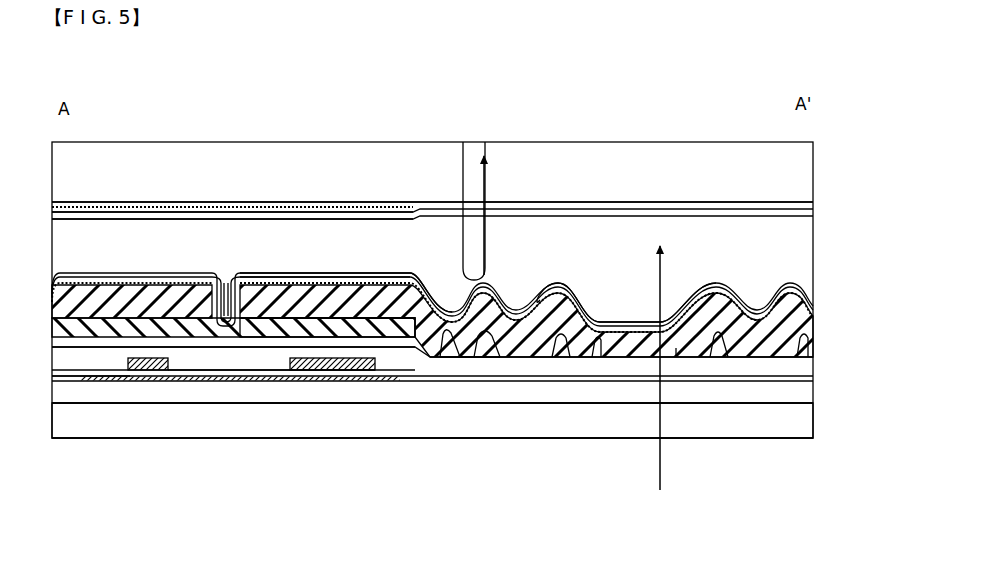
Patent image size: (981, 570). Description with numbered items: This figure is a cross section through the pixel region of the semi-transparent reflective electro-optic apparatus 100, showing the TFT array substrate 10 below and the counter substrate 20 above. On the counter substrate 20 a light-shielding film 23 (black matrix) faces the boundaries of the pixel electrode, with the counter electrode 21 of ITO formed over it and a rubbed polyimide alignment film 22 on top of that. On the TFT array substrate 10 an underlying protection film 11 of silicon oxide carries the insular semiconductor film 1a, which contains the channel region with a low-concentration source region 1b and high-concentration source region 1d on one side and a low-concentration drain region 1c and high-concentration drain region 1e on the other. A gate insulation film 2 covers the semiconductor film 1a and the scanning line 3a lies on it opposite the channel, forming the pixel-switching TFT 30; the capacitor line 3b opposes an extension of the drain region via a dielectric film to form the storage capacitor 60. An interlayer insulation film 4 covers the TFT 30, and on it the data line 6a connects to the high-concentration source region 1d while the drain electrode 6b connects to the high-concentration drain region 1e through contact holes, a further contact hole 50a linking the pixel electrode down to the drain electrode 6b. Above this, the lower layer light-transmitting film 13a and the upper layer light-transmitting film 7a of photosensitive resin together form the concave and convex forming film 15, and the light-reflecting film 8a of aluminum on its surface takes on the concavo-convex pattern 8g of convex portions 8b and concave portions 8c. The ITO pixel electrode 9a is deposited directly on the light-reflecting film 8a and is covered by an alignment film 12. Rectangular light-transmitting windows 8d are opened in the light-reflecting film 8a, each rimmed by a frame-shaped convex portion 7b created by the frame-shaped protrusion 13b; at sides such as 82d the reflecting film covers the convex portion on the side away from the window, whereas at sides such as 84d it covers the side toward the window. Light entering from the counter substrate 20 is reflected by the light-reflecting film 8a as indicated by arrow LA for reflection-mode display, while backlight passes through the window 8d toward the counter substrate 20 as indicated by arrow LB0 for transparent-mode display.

The electro-optic apparatus 100 is at (190, 110).
The counter substrate 20 is at (822, 137).
The counter electrode 21 is at (272, 214).
The alignment film 22 is at (327, 218).
The light-shielding film 23 is at (385, 210).
The TFT array substrate 10 is at (866, 308).
The underlying protection film 11 is at (808, 394).
The gate insulation film 2 is at (808, 379).
The interlayer insulation film 4 is at (808, 362).
The semiconductor film 1a is at (152, 385).
The low-concentration source region 1b is at (110, 385).
The low-concentration drain region 1c is at (208, 385).
The high-concentration source region 1d is at (80, 385).
The high-concentration drain region 1e is at (262, 385).
The pixel-switching TFT 30 is at (176, 385).
The storage capacitor 60 is at (345, 405).
The scanning line 3a is at (145, 345).
The capacitor line 3b is at (332, 345).
The data line 6a is at (100, 345).
The drain electrode 6b is at (253, 345).
The contact hole 50a is at (226, 253).
The alignment film 12 is at (272, 274).
The pixel electrode 9a is at (360, 284).
The light-reflecting film 8a is at (398, 284).
The convex portion 8b is at (804, 279).
The concave portion 8c is at (758, 306).
The light-transmitting window 8d is at (678, 296).
The concavo-convex pattern 8g is at (863, 222).
The upper layer light-transmitting film 7a is at (444, 340).
The frame-shaped convex portion 7b is at (560, 305).
The lower layer light-transmitting film 13a is at (476, 340).
The frame-shaped protrusion 13b is at (556, 345).
The concave and convex forming film 15 is at (518, 504).
The side of the light-transmitting window 82d is at (596, 345).
The side of the light-transmitting window 84d is at (678, 360).
The arrow indicating reflected light LA is at (479, 191).
The arrow indicating transmitted light LB0 is at (659, 380).